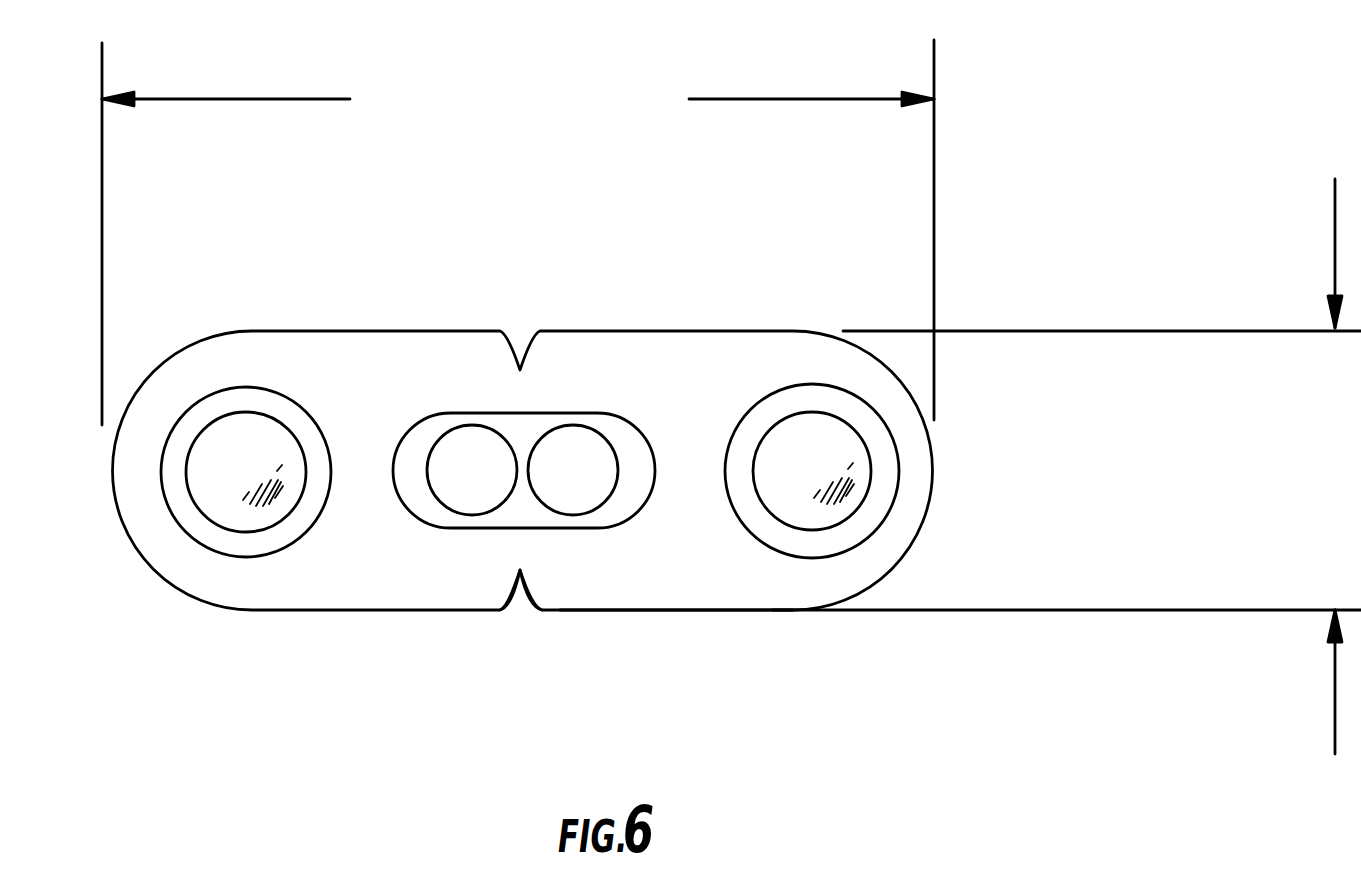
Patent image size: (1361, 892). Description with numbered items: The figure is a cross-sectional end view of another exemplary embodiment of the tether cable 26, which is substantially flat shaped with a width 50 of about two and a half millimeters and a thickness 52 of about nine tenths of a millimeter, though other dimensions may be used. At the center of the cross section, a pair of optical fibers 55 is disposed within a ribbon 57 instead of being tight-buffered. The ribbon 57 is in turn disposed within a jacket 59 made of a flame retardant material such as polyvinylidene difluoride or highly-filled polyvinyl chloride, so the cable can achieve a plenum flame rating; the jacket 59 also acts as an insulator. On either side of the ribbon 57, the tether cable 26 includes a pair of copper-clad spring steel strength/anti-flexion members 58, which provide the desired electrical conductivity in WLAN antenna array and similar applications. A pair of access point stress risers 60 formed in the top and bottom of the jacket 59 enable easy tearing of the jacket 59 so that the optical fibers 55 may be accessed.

The tether cable 26 is at (662, 331).
The width 50 is at (547, 119).
The thickness 52 is at (1348, 491).
The optical fibers 55 is at (472, 425).
The ribbon 57 is at (463, 530).
The strength/anti-flexion members 58 is at (262, 388).
The jacket 59 is at (706, 611).
The access point stress risers 60 is at (528, 627).